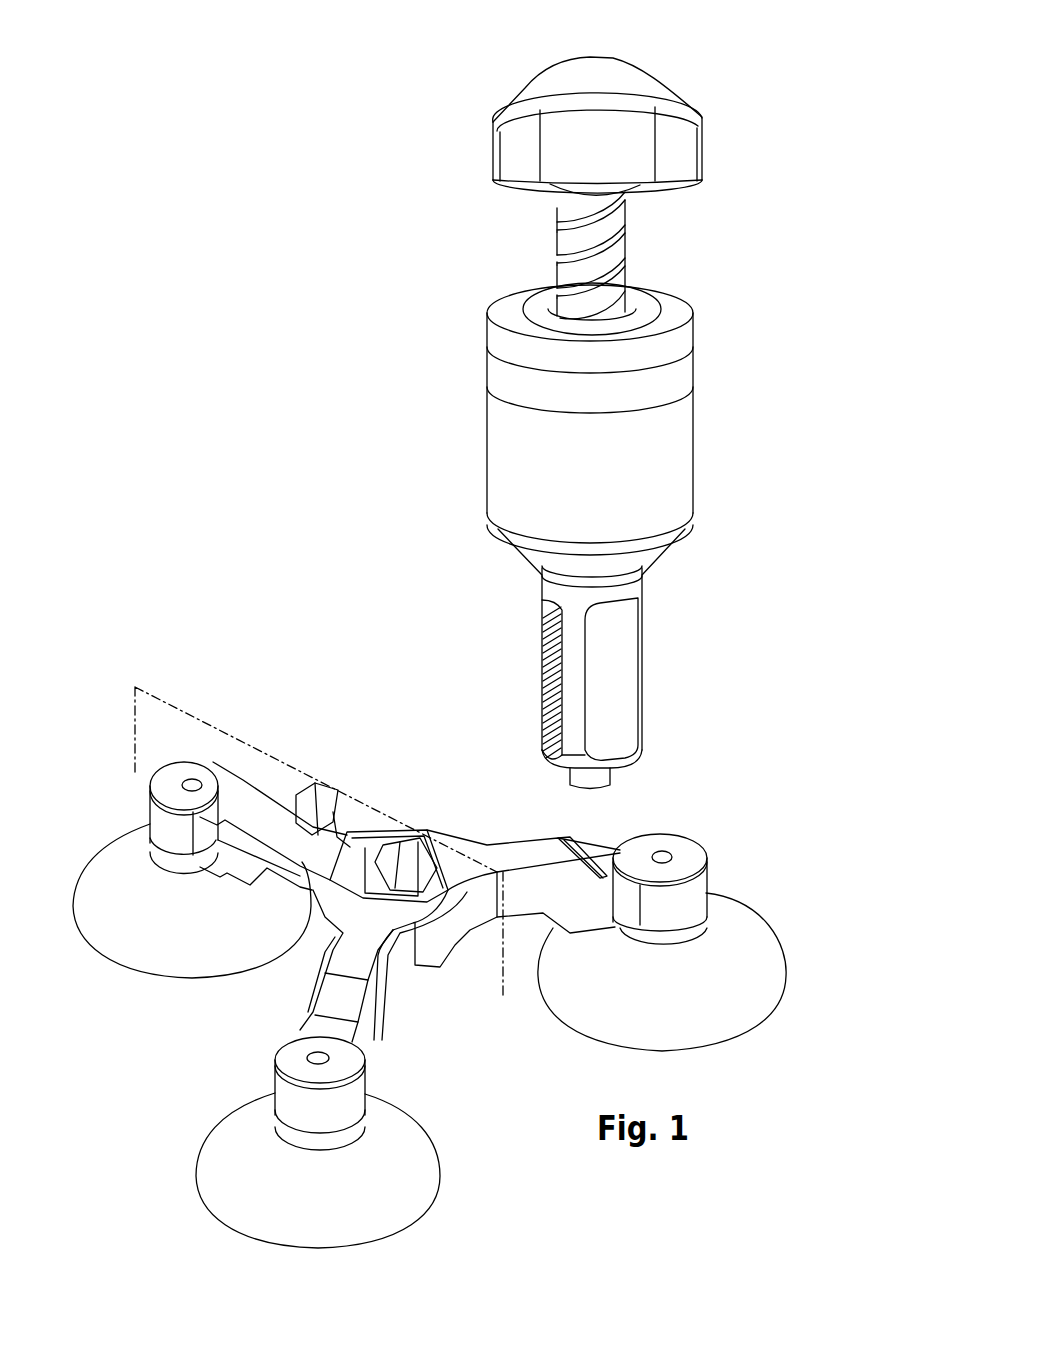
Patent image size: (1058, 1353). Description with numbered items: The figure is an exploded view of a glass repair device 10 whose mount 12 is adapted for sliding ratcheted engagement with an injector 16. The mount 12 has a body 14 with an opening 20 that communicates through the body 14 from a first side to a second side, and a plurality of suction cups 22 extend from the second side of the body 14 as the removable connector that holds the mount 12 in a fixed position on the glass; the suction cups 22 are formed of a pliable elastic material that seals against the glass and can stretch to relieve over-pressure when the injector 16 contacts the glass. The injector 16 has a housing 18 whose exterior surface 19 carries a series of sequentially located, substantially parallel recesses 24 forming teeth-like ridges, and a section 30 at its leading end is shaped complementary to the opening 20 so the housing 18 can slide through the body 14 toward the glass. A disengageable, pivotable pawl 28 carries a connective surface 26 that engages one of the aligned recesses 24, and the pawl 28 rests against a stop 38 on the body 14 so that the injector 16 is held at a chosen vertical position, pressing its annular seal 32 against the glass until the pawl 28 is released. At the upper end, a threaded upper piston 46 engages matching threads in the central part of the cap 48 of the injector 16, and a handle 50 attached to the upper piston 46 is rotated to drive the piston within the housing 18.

The glass repair device 10 is at (316, 466).
The mount 12 is at (466, 918).
The body 14 is at (525, 853).
The injector 16 is at (590, 410).
The housing 18 is at (533, 523).
The exterior surface 19 is at (584, 475).
The opening 20 is at (421, 816).
The suction cups 22 is at (185, 963).
The recesses 24 is at (557, 633).
The connective surface 26 is at (399, 888).
The pawl 28 is at (322, 795).
The section 30 is at (643, 590).
The annular seal 32 is at (615, 778).
The stop 38 is at (297, 833).
The upper piston 46 is at (617, 245).
The cap 48 is at (520, 342).
The handle 50 is at (683, 160).